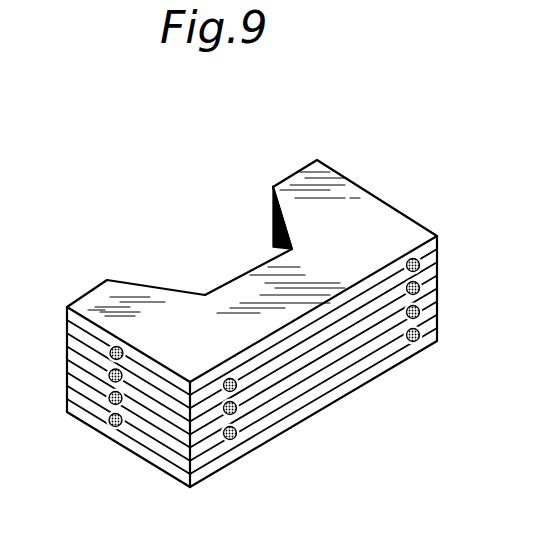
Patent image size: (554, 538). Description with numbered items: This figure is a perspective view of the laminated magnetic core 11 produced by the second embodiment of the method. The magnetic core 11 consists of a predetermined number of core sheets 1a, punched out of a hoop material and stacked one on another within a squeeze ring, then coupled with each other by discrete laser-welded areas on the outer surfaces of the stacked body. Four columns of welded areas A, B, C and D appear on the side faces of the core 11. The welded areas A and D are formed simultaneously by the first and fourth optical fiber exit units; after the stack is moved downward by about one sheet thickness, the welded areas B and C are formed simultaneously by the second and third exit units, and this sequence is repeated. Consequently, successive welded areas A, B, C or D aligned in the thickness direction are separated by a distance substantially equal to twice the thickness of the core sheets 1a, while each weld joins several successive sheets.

The core sheet 1a is at (368, 215).
The magnetic core 11 is at (360, 390).
The welded area A is at (438, 253).
The welded area B is at (237, 423).
The welded area C is at (275, 242).
The welded area D is at (117, 430).